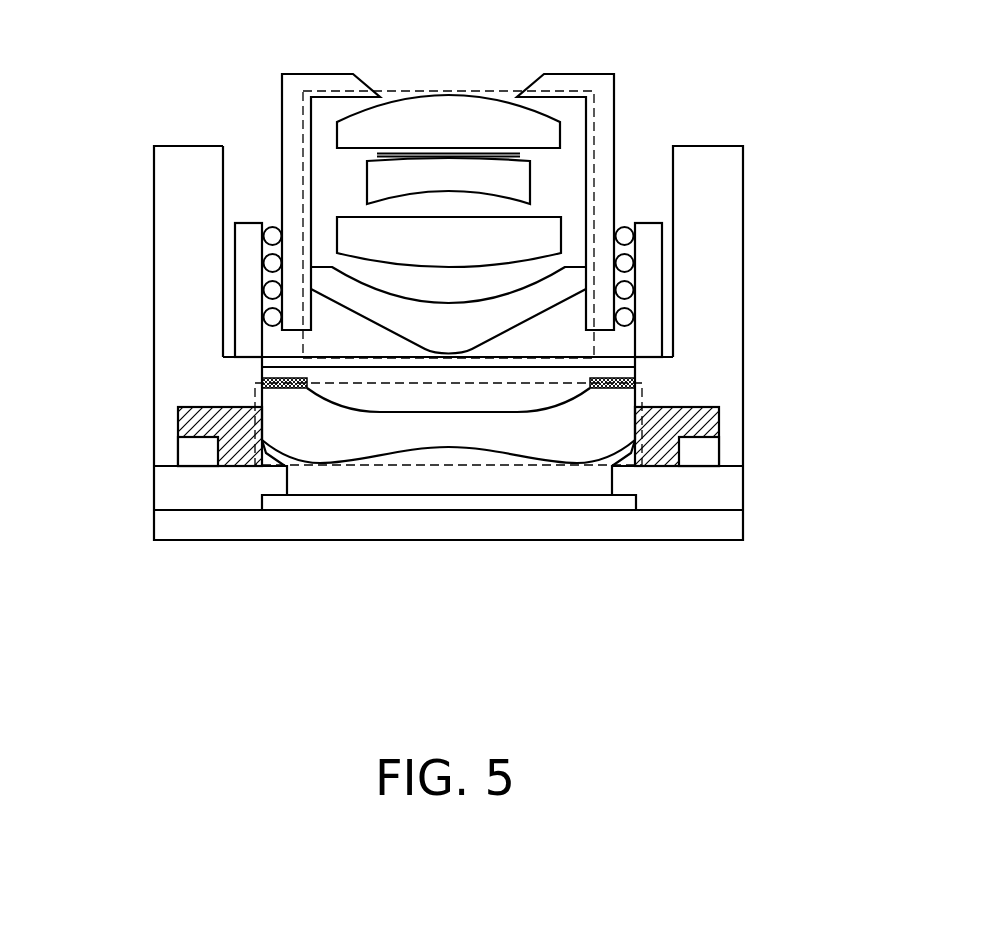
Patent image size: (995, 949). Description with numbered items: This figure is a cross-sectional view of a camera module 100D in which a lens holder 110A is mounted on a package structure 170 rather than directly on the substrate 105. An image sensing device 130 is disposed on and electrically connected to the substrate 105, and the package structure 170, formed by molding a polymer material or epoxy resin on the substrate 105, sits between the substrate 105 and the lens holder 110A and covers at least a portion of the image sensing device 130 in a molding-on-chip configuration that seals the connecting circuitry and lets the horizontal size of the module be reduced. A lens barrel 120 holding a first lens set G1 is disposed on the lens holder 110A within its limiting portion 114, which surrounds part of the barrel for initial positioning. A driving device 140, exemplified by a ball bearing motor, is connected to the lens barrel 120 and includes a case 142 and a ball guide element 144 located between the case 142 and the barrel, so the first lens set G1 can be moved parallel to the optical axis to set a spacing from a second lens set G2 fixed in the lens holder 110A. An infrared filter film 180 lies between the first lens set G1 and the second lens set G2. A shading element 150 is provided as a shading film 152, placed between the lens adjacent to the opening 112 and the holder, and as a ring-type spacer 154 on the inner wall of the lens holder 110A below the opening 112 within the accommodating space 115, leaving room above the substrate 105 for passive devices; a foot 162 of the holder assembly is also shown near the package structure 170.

The camera module 100D is at (449, 332).
The lens holder 110A is at (488, 342).
The opening 112 is at (625, 367).
The limiting portion 114 is at (717, 198).
The lens barrel 120 is at (482, 192).
The first lens set G1 is at (402, 90).
The driving device 140 is at (552, 288).
The case 142 is at (648, 277).
The ball guide element 144 is at (630, 234).
The shading element 150 is at (414, 474).
The shading film 152 is at (262, 367).
The spacer 154 is at (404, 434).
The accommodating space 115 is at (190, 455).
The second lens set G2 is at (643, 425).
The support foot 162 is at (267, 466).
The package structure 170 is at (703, 492).
The infrared filter film 180 is at (293, 361).
The image sensing device 130 is at (455, 503).
The substrate 105 is at (727, 525).